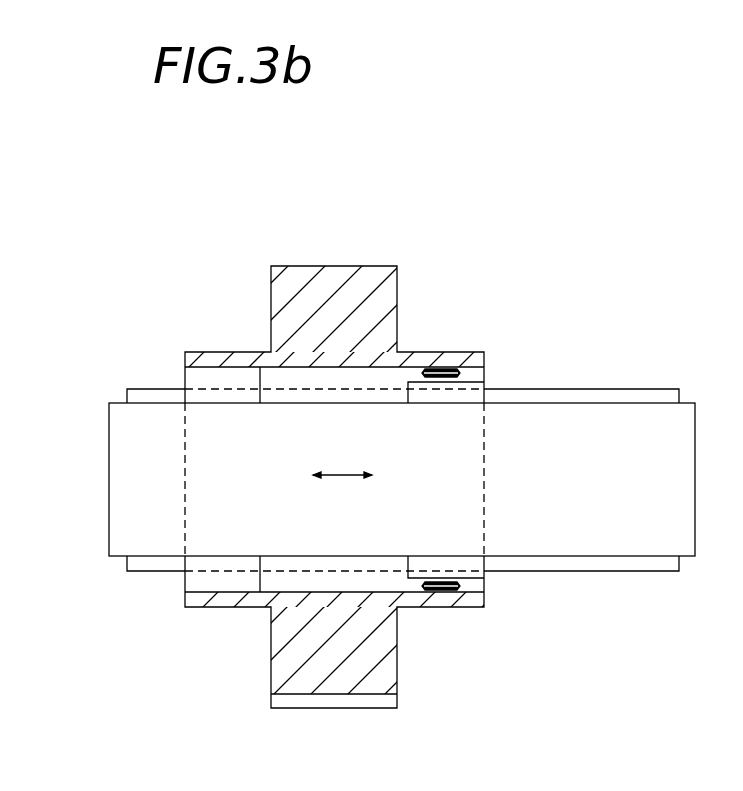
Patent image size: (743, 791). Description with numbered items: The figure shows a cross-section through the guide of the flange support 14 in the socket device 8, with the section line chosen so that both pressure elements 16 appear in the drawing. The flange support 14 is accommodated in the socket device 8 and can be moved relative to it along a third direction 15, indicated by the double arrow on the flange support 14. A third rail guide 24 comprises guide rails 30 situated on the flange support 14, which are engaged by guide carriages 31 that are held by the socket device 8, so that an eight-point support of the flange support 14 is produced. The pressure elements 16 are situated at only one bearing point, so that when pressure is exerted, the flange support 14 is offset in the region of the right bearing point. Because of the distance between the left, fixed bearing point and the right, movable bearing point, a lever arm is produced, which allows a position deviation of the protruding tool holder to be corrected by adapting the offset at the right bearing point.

The socket device 8 is at (218, 362).
The flange support 14 is at (151, 569).
The third direction 15 is at (343, 485).
The pressure elements 16 is at (459, 366).
The third rail guide 24 is at (177, 376).
The guide rails 30 is at (622, 397).
The guide carriages 31 is at (251, 380).